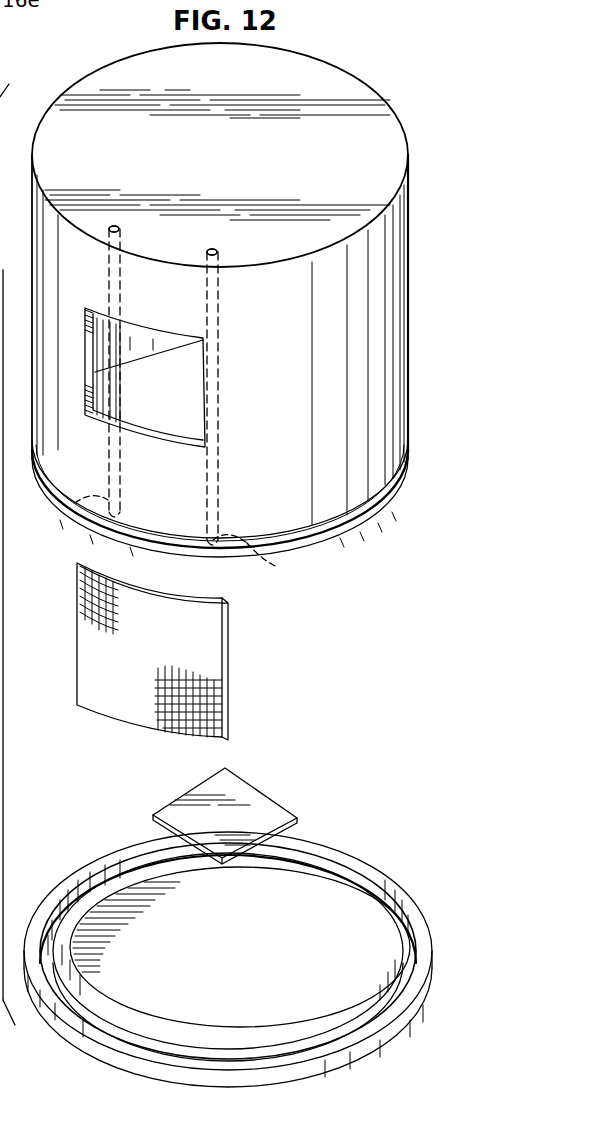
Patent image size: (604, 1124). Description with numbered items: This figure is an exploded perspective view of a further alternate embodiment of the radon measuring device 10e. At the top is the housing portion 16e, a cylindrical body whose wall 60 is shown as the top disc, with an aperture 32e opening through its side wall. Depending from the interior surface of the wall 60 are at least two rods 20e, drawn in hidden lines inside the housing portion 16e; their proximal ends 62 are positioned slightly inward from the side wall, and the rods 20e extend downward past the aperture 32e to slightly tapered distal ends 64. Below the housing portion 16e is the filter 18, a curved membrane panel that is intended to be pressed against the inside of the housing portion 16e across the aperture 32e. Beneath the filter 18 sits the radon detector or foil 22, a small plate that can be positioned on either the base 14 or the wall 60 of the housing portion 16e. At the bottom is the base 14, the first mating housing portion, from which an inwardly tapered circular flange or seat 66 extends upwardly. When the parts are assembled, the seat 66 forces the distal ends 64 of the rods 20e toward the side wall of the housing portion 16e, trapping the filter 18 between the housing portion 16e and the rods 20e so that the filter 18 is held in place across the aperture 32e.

The radon measuring device 10e is at (101, 58).
The housing portion 16e is at (305, 55).
The wall 60 is at (222, 166).
The proximal ends 62 is at (114, 226).
The rods 20e is at (121, 268).
The aperture 32e is at (158, 342).
The distal ends 64 is at (62, 507).
The filter 18 is at (198, 656).
The radon detector or foil 22 is at (267, 813).
The base 14 is at (252, 971).
The circular flange or seat 66 is at (346, 880).